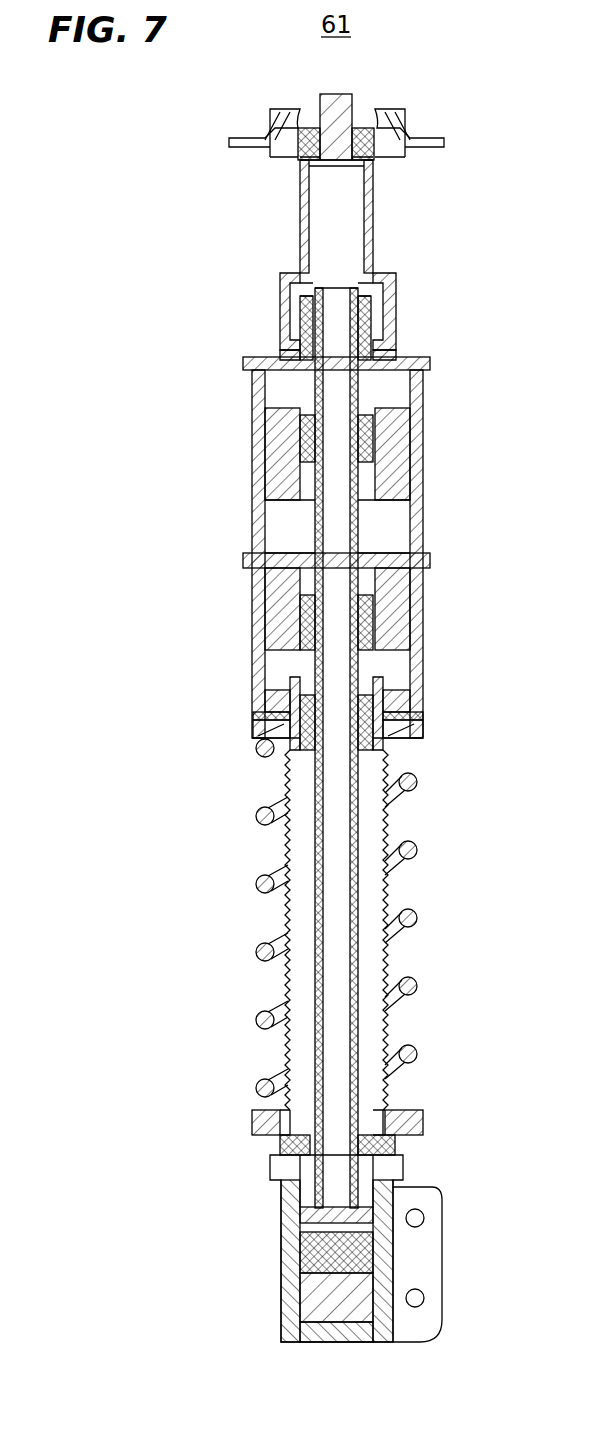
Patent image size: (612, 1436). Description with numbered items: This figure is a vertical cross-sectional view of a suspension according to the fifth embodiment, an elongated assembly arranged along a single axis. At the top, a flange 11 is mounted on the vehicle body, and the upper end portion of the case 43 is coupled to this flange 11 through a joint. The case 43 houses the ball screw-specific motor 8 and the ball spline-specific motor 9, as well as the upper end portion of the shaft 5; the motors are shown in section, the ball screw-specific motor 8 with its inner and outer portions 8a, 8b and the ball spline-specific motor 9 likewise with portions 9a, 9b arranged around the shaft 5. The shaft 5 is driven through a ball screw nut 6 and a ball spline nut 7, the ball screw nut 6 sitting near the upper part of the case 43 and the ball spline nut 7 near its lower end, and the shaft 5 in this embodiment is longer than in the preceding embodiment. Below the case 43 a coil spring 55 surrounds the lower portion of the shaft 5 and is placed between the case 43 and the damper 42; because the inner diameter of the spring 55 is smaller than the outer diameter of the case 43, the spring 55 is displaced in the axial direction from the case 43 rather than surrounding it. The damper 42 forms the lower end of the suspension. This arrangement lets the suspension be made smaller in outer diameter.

The flange 11 is at (403, 135).
The ball screw nut 6 is at (373, 328).
The case 43 is at (250, 412).
The ball screw-specific motor 8 is at (395, 454).
The outer ring of upper bearing 8a is at (400, 433).
The inner ring of upper bearing 8b is at (365, 455).
The shaft 5 is at (365, 520).
The ball spline-specific motor 9 is at (395, 612).
The outer ring of lower bearing 9a is at (400, 618).
The inner ring of lower bearing 9b is at (365, 642).
The ball spline nut 7 is at (387, 733).
The spring 55 is at (257, 952).
The damper 42 is at (279, 1252).